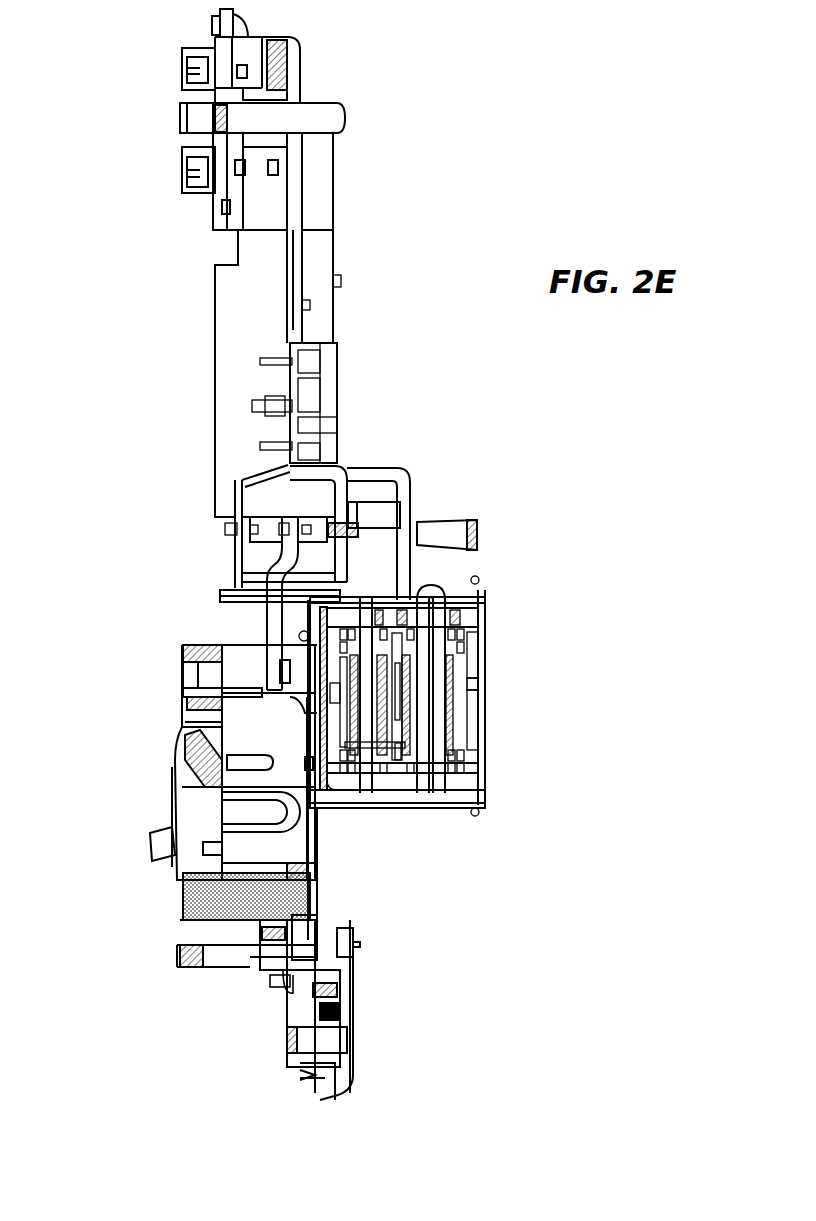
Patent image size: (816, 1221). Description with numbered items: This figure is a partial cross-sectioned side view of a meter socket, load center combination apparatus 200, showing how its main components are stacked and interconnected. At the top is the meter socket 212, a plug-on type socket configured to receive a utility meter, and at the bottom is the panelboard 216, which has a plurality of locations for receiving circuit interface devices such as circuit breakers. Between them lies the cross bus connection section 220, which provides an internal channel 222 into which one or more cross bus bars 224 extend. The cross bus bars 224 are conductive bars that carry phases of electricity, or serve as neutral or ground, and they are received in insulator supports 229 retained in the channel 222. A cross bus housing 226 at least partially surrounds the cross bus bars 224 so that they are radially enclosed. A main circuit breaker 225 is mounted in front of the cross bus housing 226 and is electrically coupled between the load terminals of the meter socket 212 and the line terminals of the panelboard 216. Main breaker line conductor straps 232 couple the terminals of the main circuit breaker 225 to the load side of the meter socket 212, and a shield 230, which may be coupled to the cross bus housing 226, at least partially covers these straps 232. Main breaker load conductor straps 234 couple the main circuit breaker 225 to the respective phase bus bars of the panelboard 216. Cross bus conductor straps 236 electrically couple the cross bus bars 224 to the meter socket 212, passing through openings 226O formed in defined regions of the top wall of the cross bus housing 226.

The meter socket, load center combination apparatus 200 is at (340, 90).
The meter socket 212 is at (168, 119).
The shield 230 is at (236, 479).
The main breaker line conductor straps 232 is at (270, 615).
The openings 226O is at (364, 588).
The cross bus conductor straps 236 is at (375, 612).
The cross bus connection section 220 is at (562, 590).
The insulator supports 229 is at (480, 643).
The cross bus bars 224 is at (350, 745).
The cross bus housing 226 is at (405, 808).
The internal channel 222 is at (378, 800).
The main circuit breaker 225 is at (178, 890).
The main breaker load conductor straps 234 is at (272, 985).
The panelboard 216 is at (360, 1010).